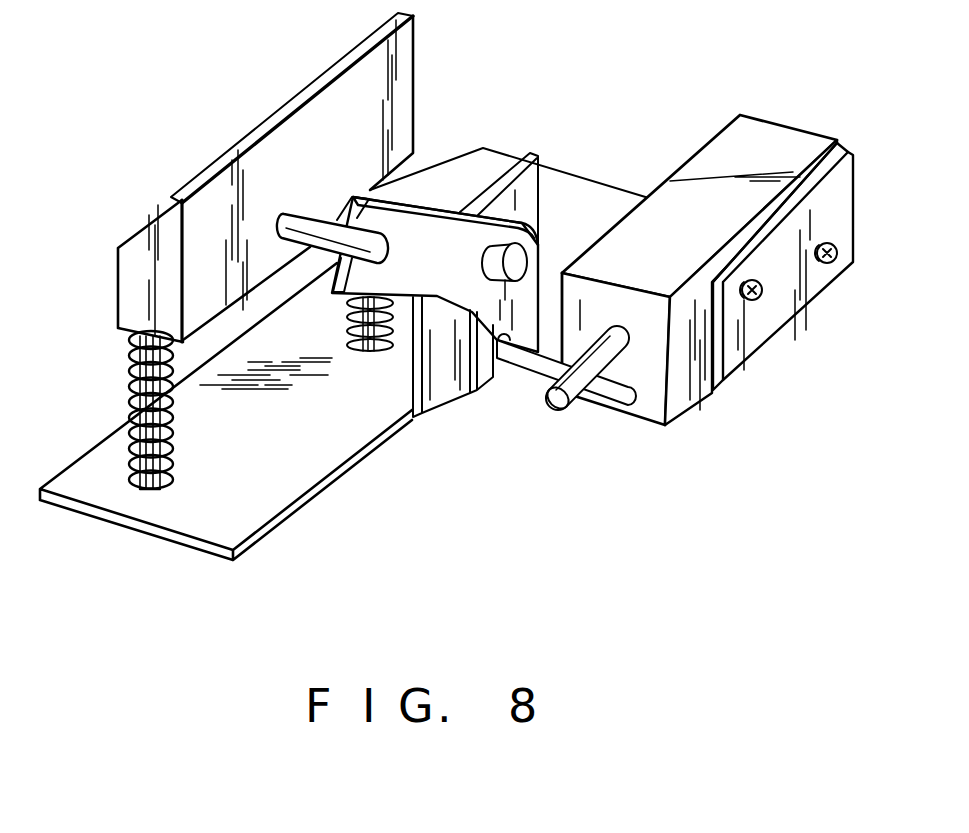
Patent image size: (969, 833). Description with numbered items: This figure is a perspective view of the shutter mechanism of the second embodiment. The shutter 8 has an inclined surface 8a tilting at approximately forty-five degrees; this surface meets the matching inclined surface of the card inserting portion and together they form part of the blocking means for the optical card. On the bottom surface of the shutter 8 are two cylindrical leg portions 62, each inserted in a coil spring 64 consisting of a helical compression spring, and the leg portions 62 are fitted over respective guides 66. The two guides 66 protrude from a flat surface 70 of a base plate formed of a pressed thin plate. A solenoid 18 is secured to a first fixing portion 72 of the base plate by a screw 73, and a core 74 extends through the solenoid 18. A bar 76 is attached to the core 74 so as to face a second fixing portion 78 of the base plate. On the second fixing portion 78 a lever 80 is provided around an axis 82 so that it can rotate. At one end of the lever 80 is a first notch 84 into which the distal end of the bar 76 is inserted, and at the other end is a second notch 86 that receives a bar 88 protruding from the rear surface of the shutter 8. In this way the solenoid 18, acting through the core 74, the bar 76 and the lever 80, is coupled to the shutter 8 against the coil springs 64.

The shutter 8 is at (410, 110).
The inclined surface 8a is at (177, 194).
The solenoid 18 is at (782, 127).
The cylindrical leg portions 62 is at (128, 386).
The coil springs 64 is at (130, 352).
The guides 66 is at (173, 463).
The flat surface 70 is at (328, 470).
The first fixing portion 72 is at (790, 288).
The screw 73 is at (838, 252).
The core 74 is at (545, 398).
The bar 76 is at (600, 400).
The second fixing portion 78 is at (535, 180).
The lever 80 is at (433, 294).
The axis 82 is at (517, 262).
The first notch 84 is at (465, 355).
The second notch 86 is at (370, 237).
The bar 88 is at (310, 220).